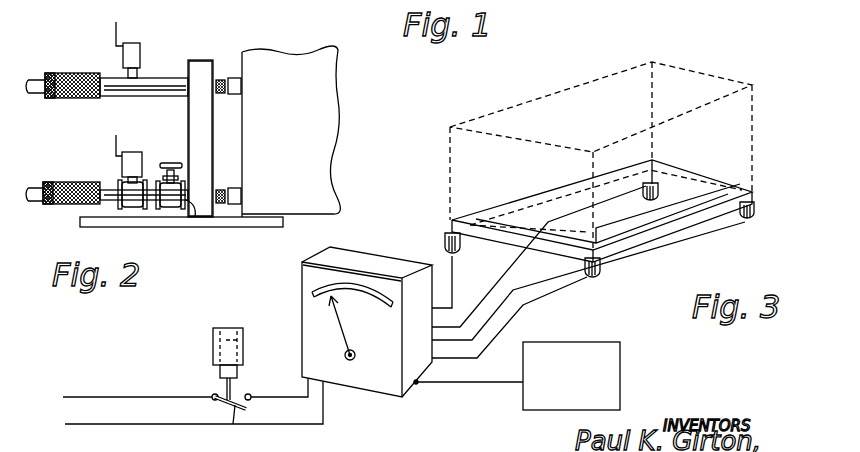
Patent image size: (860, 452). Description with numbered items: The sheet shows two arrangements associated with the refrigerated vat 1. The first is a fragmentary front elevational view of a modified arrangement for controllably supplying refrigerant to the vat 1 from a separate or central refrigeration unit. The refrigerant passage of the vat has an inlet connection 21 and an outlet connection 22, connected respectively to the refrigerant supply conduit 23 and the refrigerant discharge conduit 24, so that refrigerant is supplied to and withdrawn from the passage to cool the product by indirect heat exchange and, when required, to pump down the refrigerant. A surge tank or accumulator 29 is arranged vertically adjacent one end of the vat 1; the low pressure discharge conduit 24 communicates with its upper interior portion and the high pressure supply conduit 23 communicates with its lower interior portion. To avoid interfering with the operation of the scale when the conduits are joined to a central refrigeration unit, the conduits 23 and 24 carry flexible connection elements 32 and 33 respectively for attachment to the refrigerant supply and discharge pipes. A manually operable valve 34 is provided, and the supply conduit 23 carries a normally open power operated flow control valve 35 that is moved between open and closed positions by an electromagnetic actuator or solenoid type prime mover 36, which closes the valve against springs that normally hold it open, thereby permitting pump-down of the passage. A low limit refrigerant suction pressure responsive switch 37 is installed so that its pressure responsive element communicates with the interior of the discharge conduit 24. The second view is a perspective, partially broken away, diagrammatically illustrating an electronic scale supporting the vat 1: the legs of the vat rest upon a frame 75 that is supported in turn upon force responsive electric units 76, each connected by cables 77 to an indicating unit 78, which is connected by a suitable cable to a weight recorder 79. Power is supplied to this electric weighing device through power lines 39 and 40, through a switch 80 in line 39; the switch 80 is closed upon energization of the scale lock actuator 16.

In FIG. 2, the vat 1 is at (338, 163).
In FIG. 3, the vat 1 is at (449, 153).
In FIG. 2, the scale lock actuator 16 is at (242, 326).
In FIG. 2, the inlet end or connection 21 is at (243, 197).
In FIG. 2, the outlet end or connection 22 is at (243, 88).
In FIG. 2, the refrigerant supply conduit 23 is at (196, 218).
In FIG. 2, the refrigerant discharge conduit 24 is at (148, 78).
In FIG. 2, the surge tank or accumulator 29 is at (191, 116).
In FIG. 2, the flexible connection element 32 is at (60, 205).
In FIG. 2, the flexible connection element 33 is at (68, 80).
In FIG. 2, the manually operable valve 34 is at (166, 208).
In FIG. 2, the power operated refrigerant supply or flow control valve 35 is at (133, 208).
In FIG. 2, the electromagnetic actuator or solenoid type prime mover 36 is at (140, 144).
In FIG. 2, the low limit refrigerant suction pressure responsive switch 37 is at (132, 47).
In FIG. 2, the power line 39 is at (102, 397).
In FIG. 2, the power line 40 is at (104, 425).
In FIG. 3, the frame 75 is at (512, 238).
In FIG. 3, the electric units 76 is at (445, 241).
In FIG. 3, the cables 77 is at (503, 324).
In FIG. 2, the indicating unit 78 is at (305, 263).
In FIG. 2, the weight recorder 79 is at (612, 360).
In FIG. 2, the switch 80 is at (260, 415).